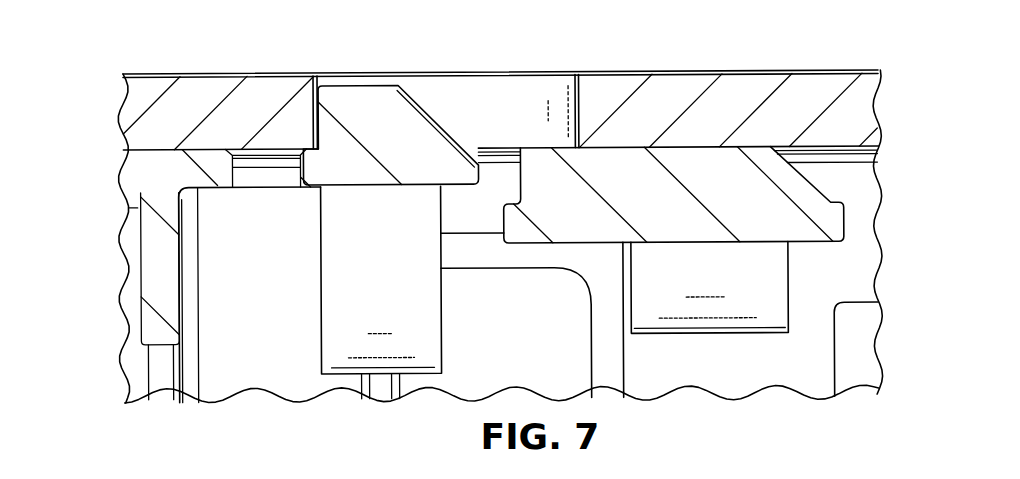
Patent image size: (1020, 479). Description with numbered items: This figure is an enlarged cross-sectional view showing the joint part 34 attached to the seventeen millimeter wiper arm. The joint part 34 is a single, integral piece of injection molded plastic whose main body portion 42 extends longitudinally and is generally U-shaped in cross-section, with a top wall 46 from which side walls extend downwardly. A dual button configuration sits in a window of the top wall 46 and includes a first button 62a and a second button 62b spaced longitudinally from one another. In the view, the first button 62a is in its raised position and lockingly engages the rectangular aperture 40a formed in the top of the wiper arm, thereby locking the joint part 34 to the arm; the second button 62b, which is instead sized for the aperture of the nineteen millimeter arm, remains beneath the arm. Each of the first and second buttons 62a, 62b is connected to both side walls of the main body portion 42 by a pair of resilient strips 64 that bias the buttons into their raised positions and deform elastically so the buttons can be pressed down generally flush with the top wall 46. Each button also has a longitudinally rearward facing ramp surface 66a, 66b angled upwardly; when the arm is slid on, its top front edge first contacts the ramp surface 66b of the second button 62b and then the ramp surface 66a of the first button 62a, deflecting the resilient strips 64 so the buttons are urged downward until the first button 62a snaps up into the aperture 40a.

The joint part 34 is at (88, 381).
The main body portion 42 is at (240, 394).
The top wall 46 is at (168, 170).
The aperture 40a is at (318, 88).
The first button 62a is at (417, 108).
The second button 62b is at (690, 126).
The ramp surface 66a is at (437, 127).
The ramp surface 66b is at (812, 187).
The resilient strips 64 is at (392, 343).